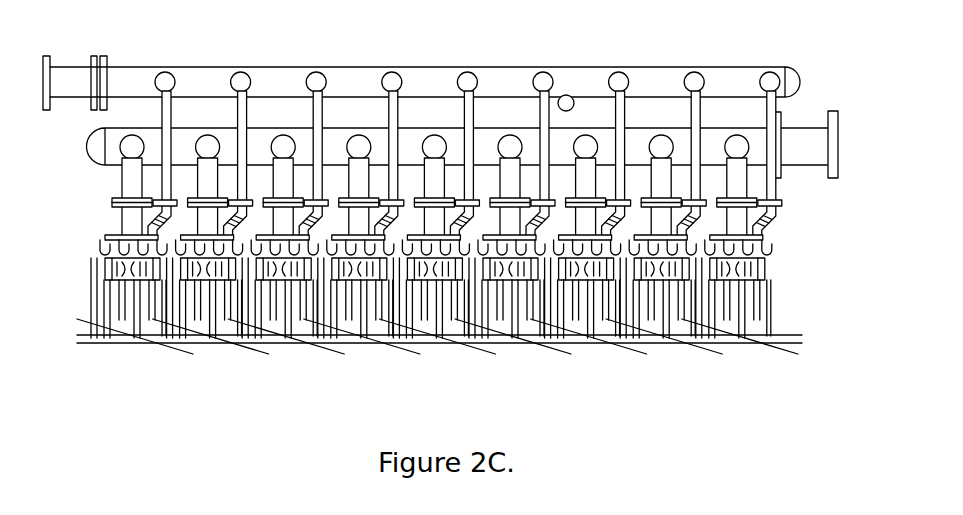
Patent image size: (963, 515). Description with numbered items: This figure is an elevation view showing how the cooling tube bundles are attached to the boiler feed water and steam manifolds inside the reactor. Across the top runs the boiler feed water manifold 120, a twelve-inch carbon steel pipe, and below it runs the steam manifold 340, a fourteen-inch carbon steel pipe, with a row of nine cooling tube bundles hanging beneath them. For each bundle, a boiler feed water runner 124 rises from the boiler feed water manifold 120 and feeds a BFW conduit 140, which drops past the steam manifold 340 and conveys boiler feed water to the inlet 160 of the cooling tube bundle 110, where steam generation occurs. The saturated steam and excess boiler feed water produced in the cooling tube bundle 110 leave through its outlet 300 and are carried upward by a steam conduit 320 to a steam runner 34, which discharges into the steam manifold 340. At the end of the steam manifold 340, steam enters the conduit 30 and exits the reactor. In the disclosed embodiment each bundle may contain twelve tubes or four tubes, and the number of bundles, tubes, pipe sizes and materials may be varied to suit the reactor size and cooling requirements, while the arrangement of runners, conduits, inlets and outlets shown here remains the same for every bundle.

The boiler feed water manifold 120 is at (142, 64).
The boiler feed water runner 124 is at (248, 73).
The steam manifold 340 is at (451, 147).
The steam runner 34 is at (585, 142).
The conduit 30 is at (818, 124).
The BFW conduit 140 is at (162, 110).
The steam conduit 320 is at (131, 178).
The outlet 300 is at (115, 207).
The inlet 160 is at (781, 210).
The cooling tube bundle 110 is at (795, 276).